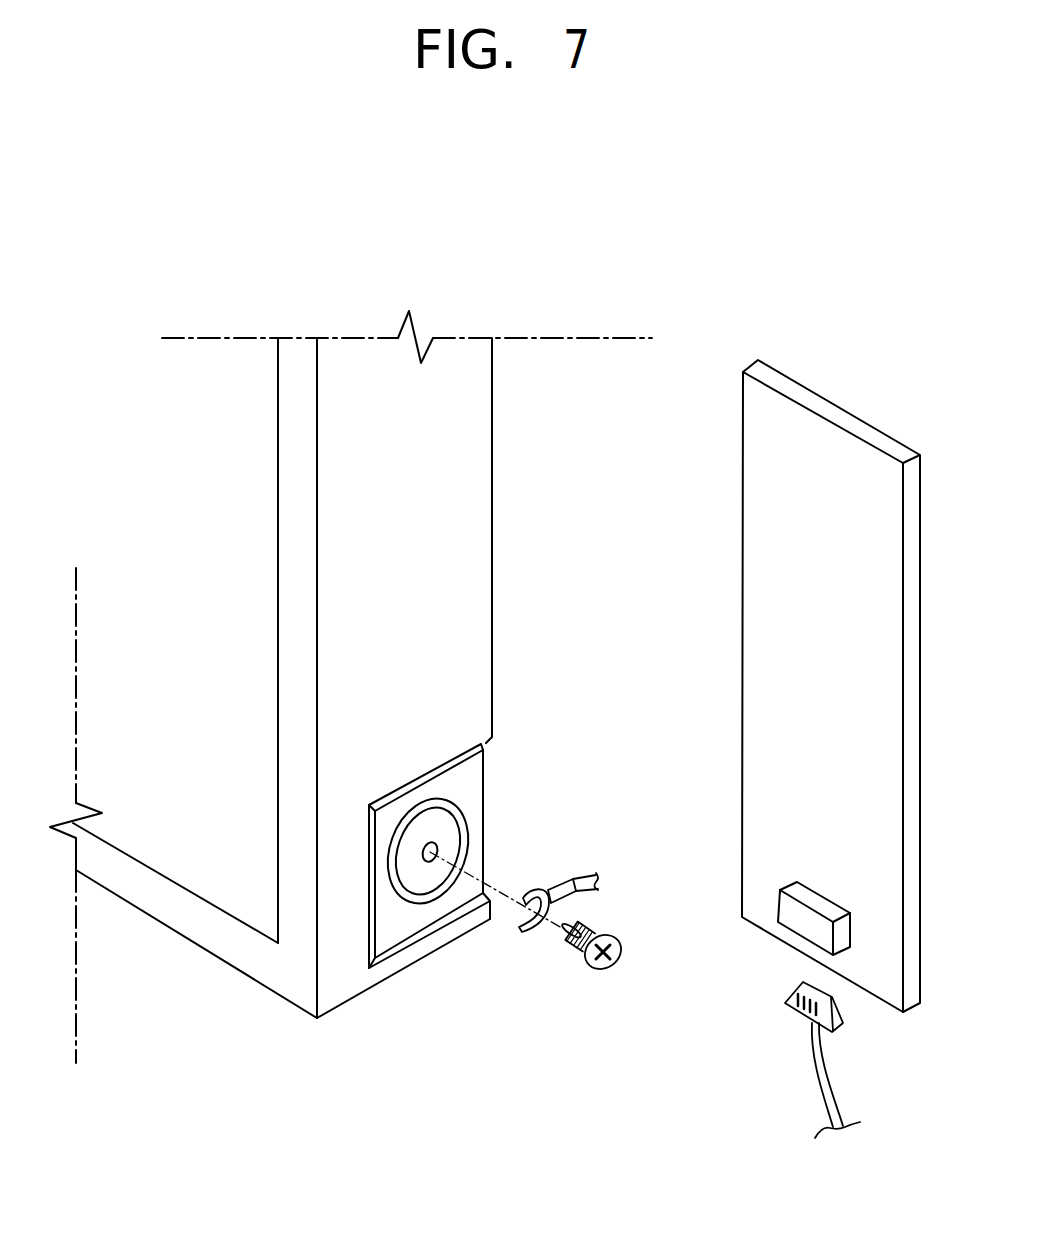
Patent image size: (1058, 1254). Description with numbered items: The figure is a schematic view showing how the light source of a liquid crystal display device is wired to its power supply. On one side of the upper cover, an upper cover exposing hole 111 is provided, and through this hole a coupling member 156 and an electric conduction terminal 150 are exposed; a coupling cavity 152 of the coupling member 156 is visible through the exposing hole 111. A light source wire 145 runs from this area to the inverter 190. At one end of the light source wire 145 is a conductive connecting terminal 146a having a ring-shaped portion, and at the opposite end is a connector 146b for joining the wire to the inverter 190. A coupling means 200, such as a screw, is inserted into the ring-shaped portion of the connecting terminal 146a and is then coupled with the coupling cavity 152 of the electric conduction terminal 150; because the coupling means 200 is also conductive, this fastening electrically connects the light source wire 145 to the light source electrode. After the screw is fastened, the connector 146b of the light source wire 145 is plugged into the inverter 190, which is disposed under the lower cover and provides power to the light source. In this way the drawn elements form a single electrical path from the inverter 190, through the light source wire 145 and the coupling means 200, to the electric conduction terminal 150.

The upper cover exposing hole 111 is at (486, 742).
The light source wire 145 is at (578, 882).
The connecting terminal 146a is at (522, 932).
The connector 146b is at (792, 995).
The electric conduction terminal 150 is at (417, 880).
The coupling cavity 152 is at (430, 852).
The coupling member 156 is at (383, 946).
The inverter 190 is at (837, 412).
The coupling means 200 is at (596, 968).